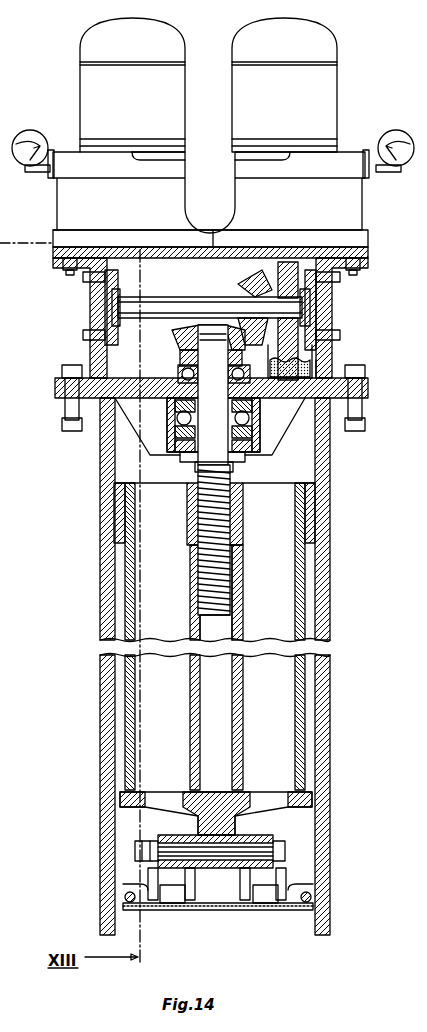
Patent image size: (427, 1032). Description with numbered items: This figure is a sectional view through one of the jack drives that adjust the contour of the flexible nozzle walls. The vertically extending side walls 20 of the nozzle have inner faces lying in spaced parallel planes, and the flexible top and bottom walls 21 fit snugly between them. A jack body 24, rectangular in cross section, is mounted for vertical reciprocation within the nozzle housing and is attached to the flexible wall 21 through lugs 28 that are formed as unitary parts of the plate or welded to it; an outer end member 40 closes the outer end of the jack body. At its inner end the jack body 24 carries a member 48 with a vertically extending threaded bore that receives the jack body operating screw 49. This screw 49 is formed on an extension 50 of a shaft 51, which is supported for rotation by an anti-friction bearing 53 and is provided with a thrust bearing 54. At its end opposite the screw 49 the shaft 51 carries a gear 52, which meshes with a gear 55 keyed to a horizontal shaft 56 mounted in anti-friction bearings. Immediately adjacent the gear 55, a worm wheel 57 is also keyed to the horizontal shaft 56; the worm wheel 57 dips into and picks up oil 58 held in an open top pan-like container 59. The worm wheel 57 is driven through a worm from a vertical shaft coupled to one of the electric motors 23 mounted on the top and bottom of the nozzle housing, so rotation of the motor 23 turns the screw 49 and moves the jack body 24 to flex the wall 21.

The side walls 20 is at (108, 825).
The top and bottom walls 21 is at (240, 910).
The electric motors 23 is at (140, 104).
The jack bodies 24 is at (296, 728).
The lugs 28 is at (175, 898).
The outer end member 40 is at (232, 830).
The member with threaded bore 48 is at (190, 507).
The jack body operating screw 49 is at (218, 613).
The extension 50 is at (210, 468).
The shaft 51 is at (228, 402).
The gear 52 is at (175, 333).
The anti-friction bearing 53 is at (182, 372).
The thrust bearing 54 is at (245, 420).
The gear 55 is at (250, 283).
The horizontal shaft 56 is at (150, 300).
The worm wheel 57 is at (283, 262).
The oil 58 is at (325, 368).
The pan-like container 59 is at (320, 363).